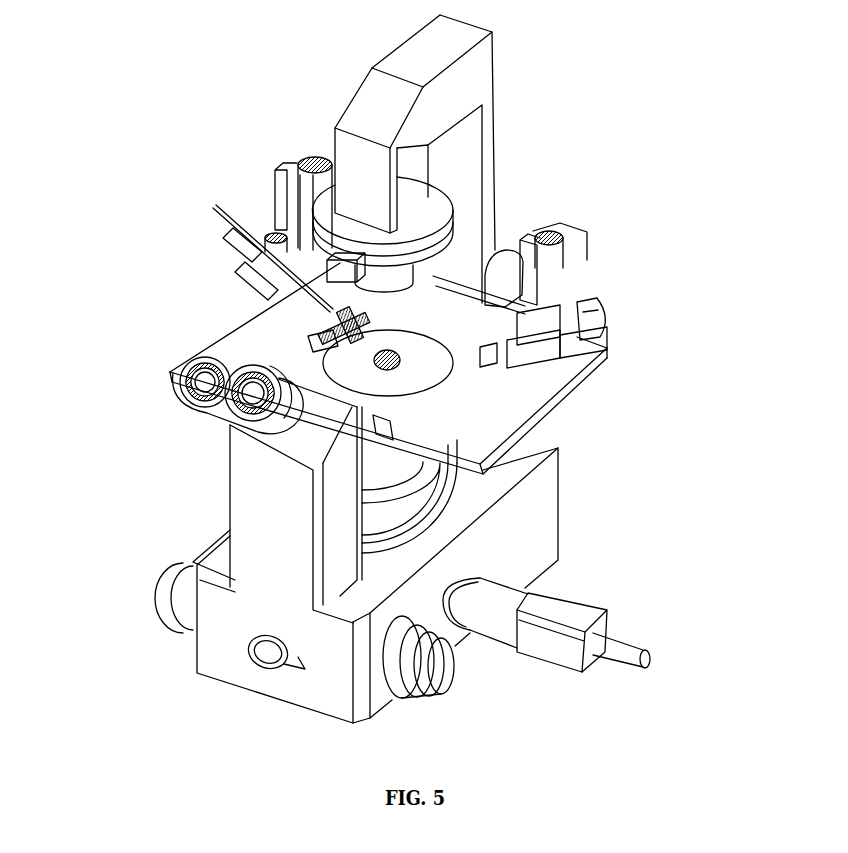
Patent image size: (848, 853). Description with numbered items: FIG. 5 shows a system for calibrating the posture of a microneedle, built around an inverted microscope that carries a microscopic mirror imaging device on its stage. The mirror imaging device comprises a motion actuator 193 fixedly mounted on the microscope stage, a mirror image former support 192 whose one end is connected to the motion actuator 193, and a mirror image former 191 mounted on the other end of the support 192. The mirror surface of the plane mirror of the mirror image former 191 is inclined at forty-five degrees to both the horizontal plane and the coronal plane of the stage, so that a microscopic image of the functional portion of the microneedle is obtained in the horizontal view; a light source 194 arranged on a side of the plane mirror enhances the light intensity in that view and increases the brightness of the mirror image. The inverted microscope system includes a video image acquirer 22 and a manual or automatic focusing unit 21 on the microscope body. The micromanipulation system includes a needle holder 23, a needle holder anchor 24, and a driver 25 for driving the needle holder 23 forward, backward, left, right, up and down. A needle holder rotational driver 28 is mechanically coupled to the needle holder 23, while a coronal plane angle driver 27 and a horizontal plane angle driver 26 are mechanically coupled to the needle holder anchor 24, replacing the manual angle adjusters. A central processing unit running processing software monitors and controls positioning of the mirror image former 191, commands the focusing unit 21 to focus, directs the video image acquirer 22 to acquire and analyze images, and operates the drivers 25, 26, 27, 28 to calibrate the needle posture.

The focusing unit 21 is at (469, 677).
The video image acquirer 22 is at (631, 625).
The needle holder 23 is at (581, 326).
The needle holder anchor 24 is at (564, 288).
The driver 25 is at (607, 246).
The horizontal plane angle driver 26 is at (516, 374).
The coronal plane angle driver 27 is at (557, 370).
The needle holder rotational driver 28 is at (545, 344).
The mirror image former 191 is at (353, 362).
The mirror image former support 192 is at (293, 339).
The motion actuator 193 is at (304, 317).
The light source 194 is at (412, 440).